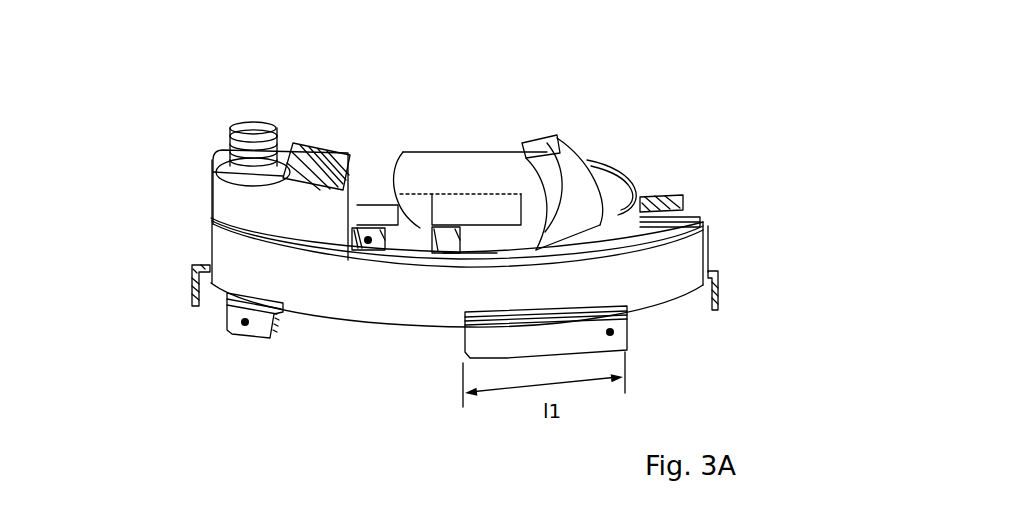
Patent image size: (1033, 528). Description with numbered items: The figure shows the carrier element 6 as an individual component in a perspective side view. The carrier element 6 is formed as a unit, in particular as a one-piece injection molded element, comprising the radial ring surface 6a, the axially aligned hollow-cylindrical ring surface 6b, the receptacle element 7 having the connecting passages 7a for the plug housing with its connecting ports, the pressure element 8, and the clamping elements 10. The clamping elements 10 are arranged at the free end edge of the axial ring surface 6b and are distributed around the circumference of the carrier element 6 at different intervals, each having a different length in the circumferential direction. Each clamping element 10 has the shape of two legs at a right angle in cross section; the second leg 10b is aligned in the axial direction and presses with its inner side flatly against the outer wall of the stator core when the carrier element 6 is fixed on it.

The carrier element 6 is at (592, 70).
The radial ring surface 6a is at (661, 235).
The axial ring surface 6b is at (247, 260).
The receptacle element 7 is at (200, 97).
The connecting passages 7a is at (247, 165).
The pressure element 8 is at (555, 157).
The clamping elements 10 is at (450, 222).
The second leg 10b is at (190, 292).